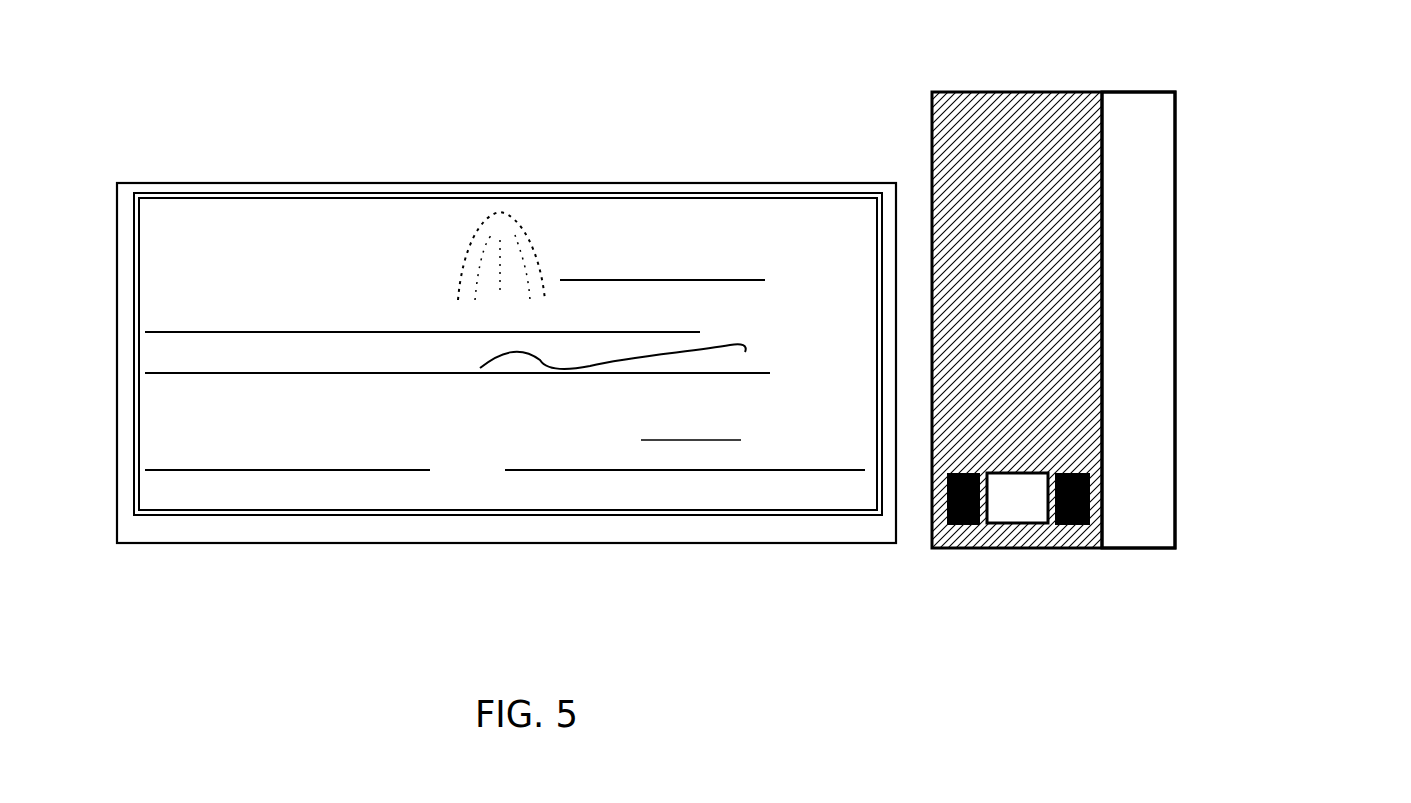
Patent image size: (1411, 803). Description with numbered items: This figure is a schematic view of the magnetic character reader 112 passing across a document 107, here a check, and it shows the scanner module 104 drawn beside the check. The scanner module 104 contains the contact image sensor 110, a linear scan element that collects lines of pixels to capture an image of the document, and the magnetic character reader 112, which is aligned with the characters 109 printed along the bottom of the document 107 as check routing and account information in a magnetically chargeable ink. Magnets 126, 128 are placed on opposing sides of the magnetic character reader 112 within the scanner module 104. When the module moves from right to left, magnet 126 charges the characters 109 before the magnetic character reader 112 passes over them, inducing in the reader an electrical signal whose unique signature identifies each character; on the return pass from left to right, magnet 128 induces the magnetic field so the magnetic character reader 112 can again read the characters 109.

The scanner module 104 is at (978, 152).
The document 107 is at (225, 217).
The character 109 is at (285, 503).
The contact image sensor 110 is at (1145, 255).
The magnetic character reader 112 is at (1015, 525).
The magnet 126 is at (952, 525).
The magnet 128 is at (1070, 525).